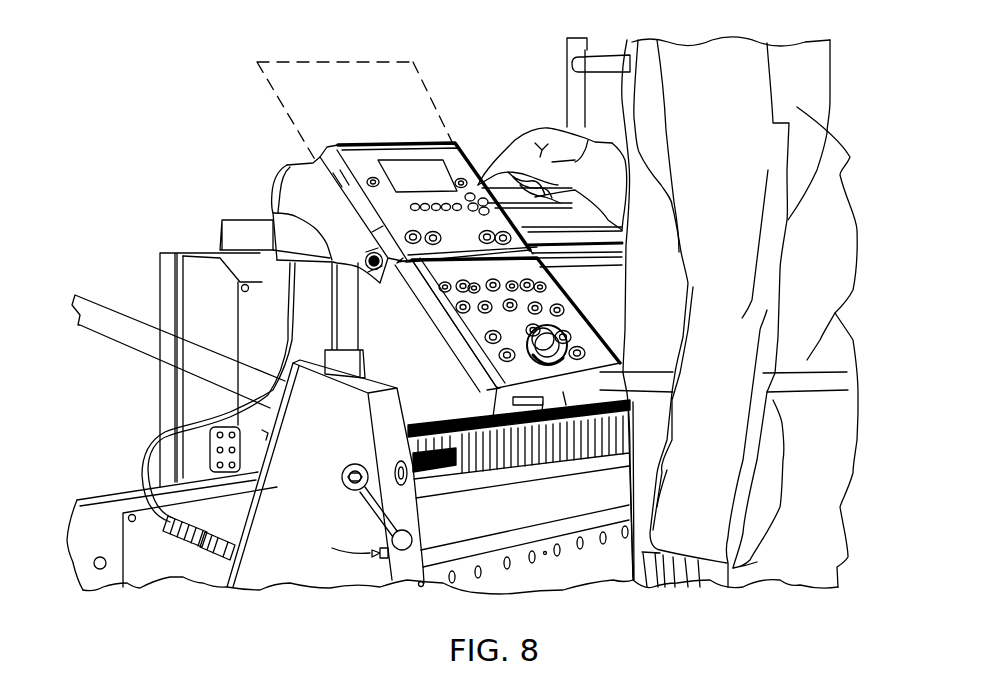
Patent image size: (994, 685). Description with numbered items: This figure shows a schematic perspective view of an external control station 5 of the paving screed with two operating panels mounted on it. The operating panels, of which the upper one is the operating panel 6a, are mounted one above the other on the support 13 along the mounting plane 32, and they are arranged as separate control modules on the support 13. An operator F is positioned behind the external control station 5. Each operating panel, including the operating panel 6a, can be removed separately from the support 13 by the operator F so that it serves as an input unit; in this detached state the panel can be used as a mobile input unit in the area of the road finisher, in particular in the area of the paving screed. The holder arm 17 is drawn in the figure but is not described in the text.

The external control station 5 is at (247, 152).
The operating panel 6a is at (422, 143).
The support 13 is at (385, 296).
The holder arm 17 is at (273, 213).
The mounting plane 32 is at (367, 78).
The operator F is at (827, 104).